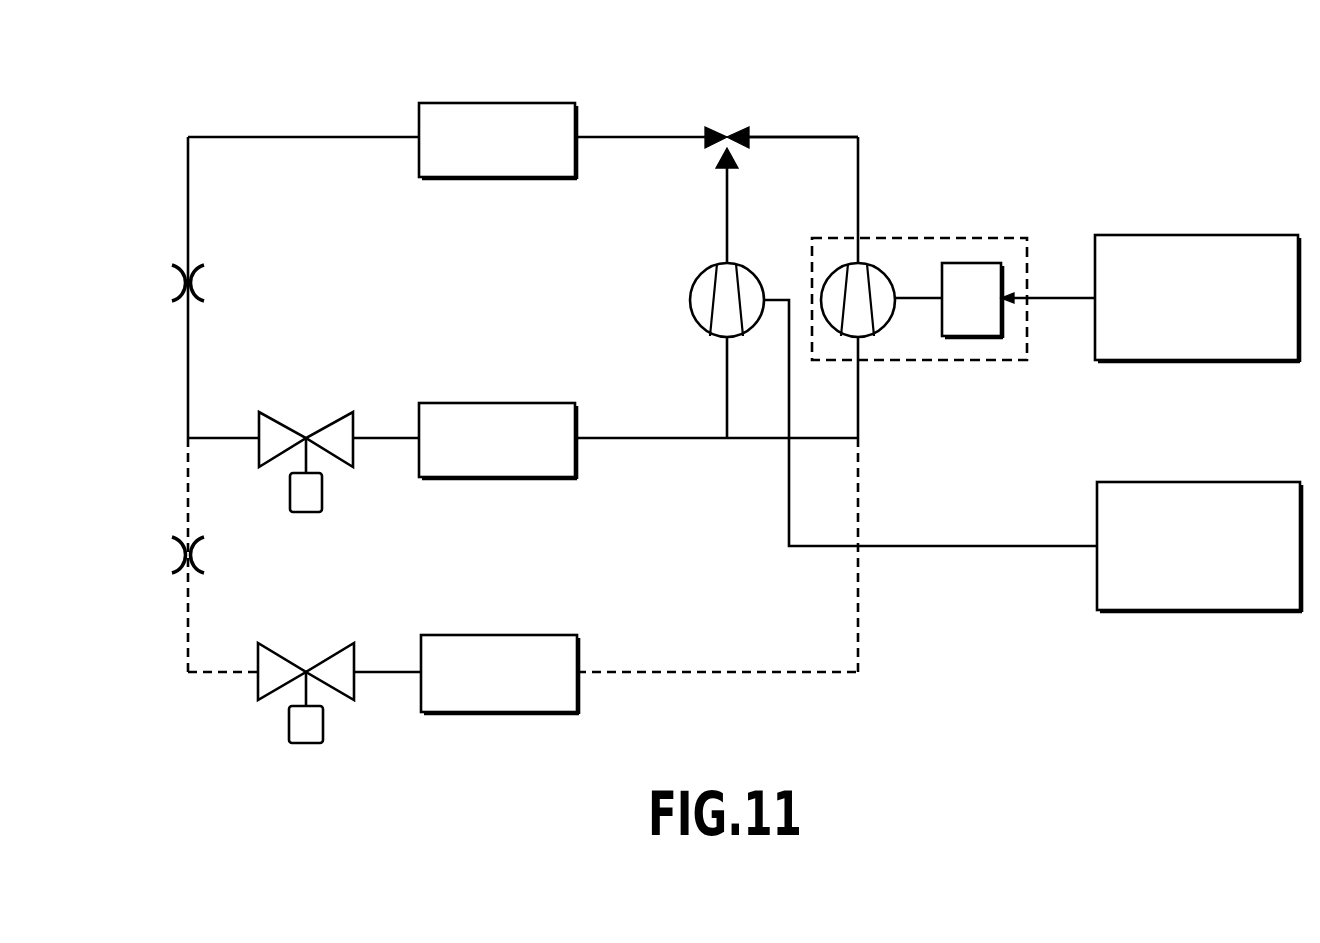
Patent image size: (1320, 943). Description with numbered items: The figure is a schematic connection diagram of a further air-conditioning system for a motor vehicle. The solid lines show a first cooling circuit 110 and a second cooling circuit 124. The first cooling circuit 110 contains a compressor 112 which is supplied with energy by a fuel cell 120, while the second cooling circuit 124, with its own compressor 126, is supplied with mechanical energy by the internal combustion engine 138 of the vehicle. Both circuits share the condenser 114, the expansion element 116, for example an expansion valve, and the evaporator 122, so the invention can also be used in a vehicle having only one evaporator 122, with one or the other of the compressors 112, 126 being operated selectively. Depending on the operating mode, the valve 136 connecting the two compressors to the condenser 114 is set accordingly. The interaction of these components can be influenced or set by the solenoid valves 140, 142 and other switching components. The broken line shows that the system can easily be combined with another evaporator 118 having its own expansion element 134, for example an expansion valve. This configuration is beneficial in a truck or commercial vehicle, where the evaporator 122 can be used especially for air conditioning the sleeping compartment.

The first cooling circuit 110 is at (806, 137).
The compressor 112 is at (900, 238).
The condenser 114 is at (520, 103).
The expansion element 116 is at (175, 278).
The evaporator 118 is at (508, 635).
The fuel cell 120 is at (1150, 235).
The evaporator 122 is at (505, 403).
The second cooling circuit 124 is at (727, 197).
The compressor 126 is at (693, 290).
The expansion element 134 is at (176, 552).
The valve 136 is at (722, 127).
The internal combustion engine 138 is at (1148, 482).
The solenoid valve 140 is at (332, 421).
The solenoid valve 142 is at (330, 654).